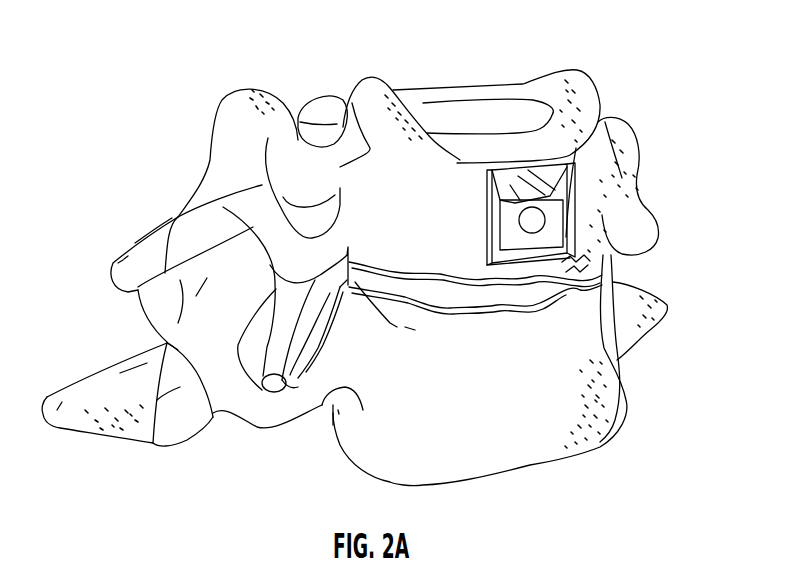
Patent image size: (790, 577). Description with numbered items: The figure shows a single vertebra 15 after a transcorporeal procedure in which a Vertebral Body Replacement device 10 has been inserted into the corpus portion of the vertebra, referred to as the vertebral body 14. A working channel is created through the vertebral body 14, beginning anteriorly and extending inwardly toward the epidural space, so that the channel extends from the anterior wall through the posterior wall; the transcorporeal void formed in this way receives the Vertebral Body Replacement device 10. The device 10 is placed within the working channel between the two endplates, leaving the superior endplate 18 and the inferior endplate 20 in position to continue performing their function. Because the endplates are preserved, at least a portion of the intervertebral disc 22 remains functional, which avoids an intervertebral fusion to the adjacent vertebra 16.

The Vertebral Body Replacement device 10 is at (557, 210).
The vertebral body 14 is at (423, 223).
The vertebra 15 is at (315, 174).
The adjacent vertebra 16 is at (322, 406).
The superior endplate 18 is at (576, 148).
The inferior endplate 20 is at (578, 284).
The intervertebral disc 22 is at (517, 292).